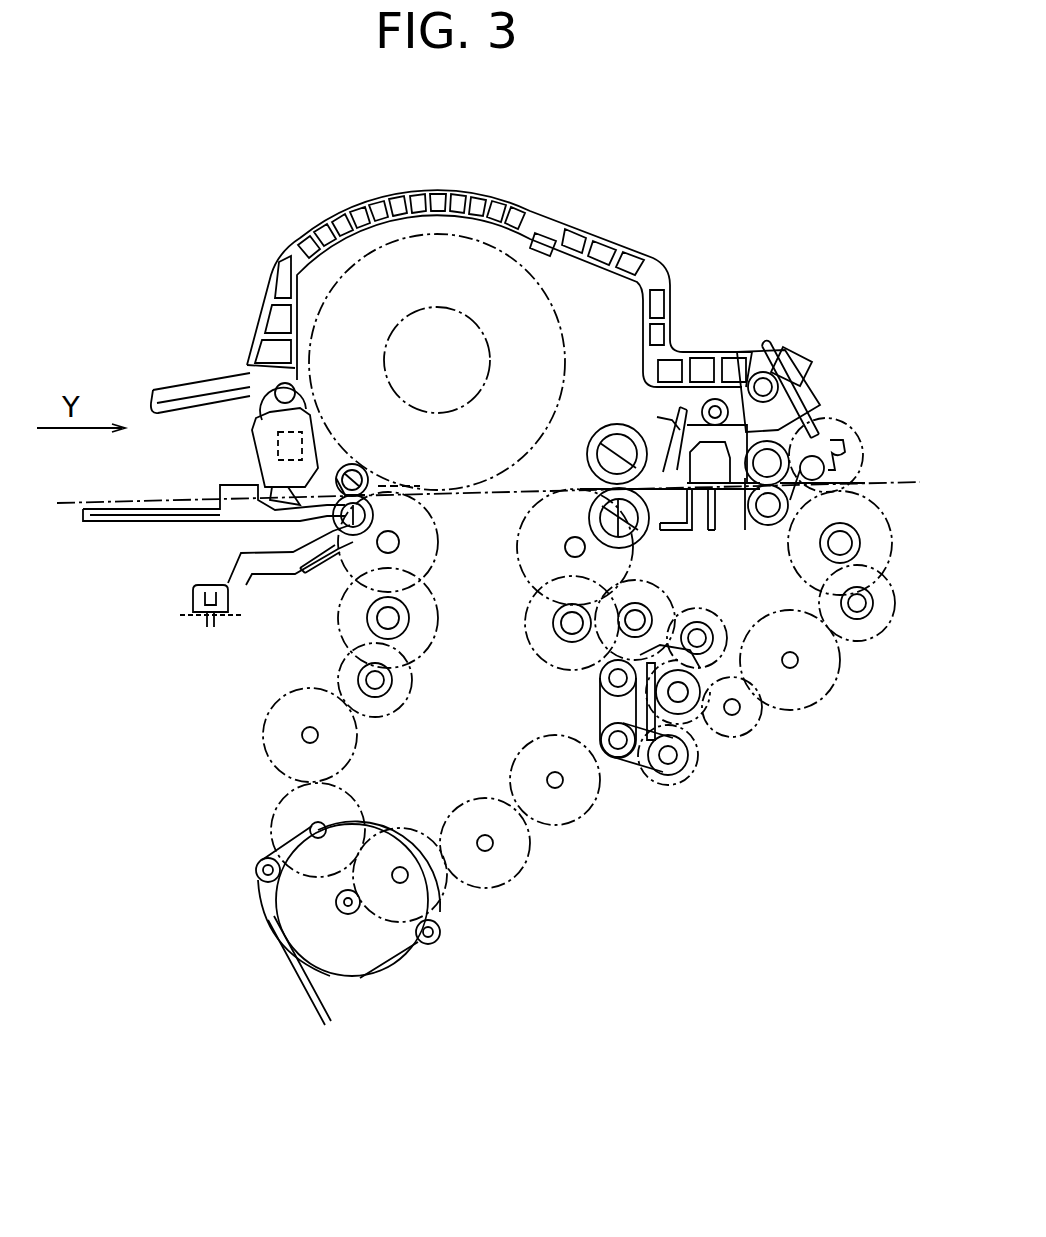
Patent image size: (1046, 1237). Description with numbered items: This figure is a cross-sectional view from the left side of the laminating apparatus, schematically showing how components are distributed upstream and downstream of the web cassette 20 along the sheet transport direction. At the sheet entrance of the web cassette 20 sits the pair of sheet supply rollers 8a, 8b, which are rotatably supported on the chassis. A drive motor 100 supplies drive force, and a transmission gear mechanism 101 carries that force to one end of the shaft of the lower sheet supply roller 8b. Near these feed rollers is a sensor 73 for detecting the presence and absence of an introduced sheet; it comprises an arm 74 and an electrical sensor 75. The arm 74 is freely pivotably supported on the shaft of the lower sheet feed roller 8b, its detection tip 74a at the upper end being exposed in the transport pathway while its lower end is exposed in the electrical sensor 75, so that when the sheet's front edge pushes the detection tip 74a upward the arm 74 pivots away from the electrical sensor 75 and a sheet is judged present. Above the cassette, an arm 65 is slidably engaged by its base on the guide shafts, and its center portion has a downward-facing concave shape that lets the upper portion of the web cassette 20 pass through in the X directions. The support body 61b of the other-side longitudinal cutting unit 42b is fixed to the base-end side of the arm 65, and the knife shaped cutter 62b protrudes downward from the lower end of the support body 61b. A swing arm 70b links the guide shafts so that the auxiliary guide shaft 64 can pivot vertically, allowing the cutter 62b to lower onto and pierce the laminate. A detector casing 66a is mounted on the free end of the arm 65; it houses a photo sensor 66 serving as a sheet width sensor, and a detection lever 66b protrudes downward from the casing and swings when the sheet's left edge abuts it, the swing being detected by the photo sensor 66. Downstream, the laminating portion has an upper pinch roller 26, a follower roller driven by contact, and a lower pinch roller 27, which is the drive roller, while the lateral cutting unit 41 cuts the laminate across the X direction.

The web cassette 20 is at (440, 250).
The arm 65 is at (530, 210).
The photo sensor 66 is at (322, 425).
The detector casing 66a is at (256, 440).
The detection lever 66b is at (235, 537).
The sensor 73 is at (188, 567).
The arm 74 is at (250, 577).
The electrical sensor 75 is at (200, 623).
The sheet supply roller 8a is at (367, 462).
The detection tip 74a is at (372, 482).
The sheet supply roller 8b is at (352, 535).
The cutter 62b is at (592, 447).
The upper pinch roller 26 is at (588, 460).
The lower pinch roller 27 is at (575, 527).
The other-side longitudinal cutting unit 42b is at (651, 388).
The support body 61b is at (652, 418).
The auxiliary guide shaft 64 is at (714, 399).
The lateral cutting unit 41 is at (697, 505).
The swing arm 70b is at (830, 563).
The transmission gear mechanism 101 is at (245, 799).
The drive motor 100 is at (360, 955).